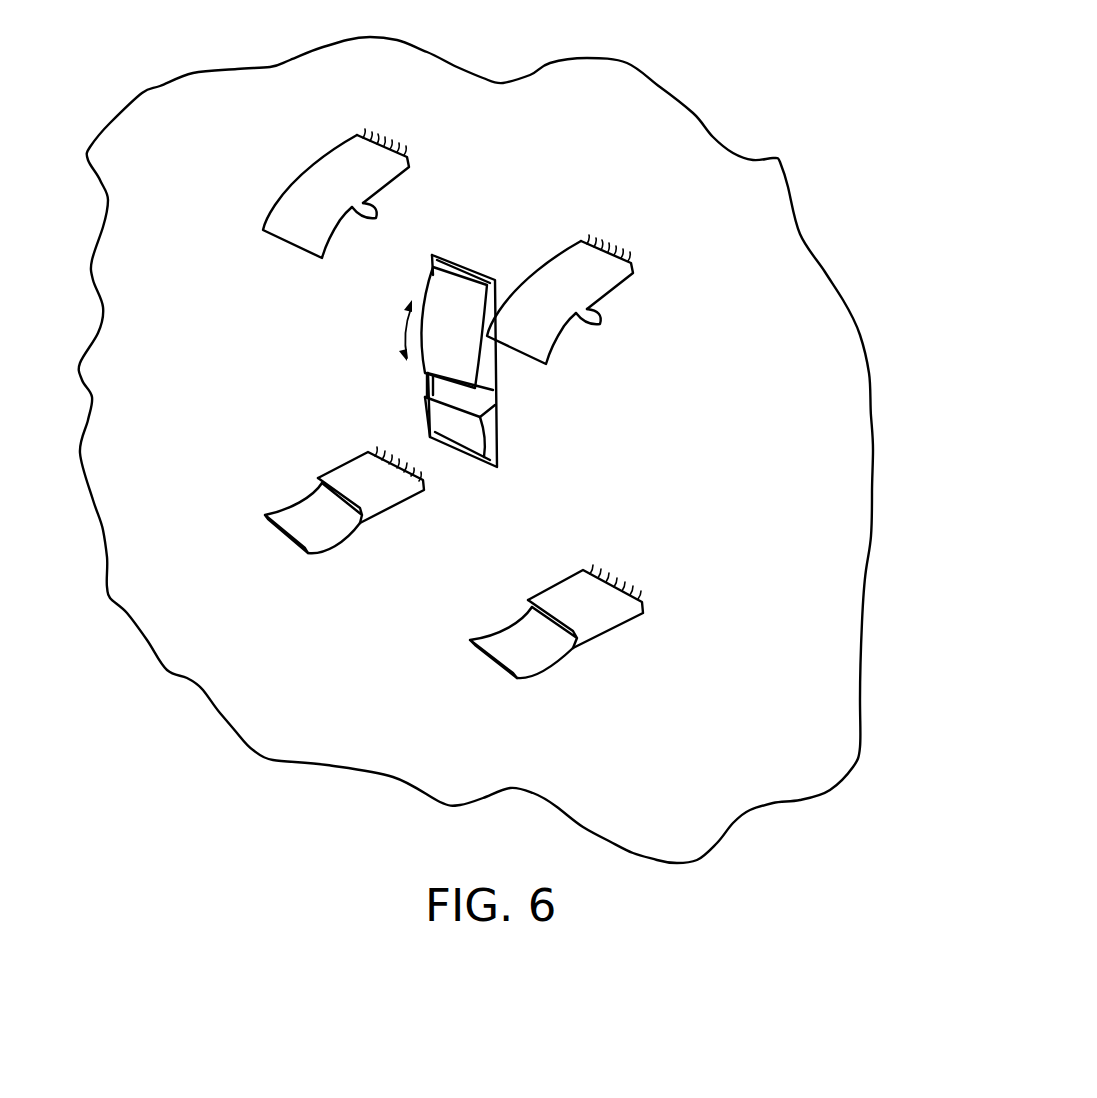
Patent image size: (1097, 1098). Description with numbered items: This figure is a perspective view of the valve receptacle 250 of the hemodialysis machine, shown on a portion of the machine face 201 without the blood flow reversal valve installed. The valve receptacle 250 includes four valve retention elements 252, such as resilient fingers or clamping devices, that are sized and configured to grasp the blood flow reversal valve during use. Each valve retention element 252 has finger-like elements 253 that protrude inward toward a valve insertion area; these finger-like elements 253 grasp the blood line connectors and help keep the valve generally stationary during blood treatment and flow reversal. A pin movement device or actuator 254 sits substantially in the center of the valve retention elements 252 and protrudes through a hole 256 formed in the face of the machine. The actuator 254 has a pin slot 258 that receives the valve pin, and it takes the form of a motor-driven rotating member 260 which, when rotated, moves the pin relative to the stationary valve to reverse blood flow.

The substrate body 201 is at (825, 623).
The valve receptacle 250 is at (680, 163).
The valve retention elements 252 is at (337, 163).
The finger-like elements 253 is at (382, 208).
The actuator 254 is at (510, 422).
The hole 256 is at (460, 266).
The pin slot 258 is at (400, 384).
The rotating member 260 is at (443, 308).